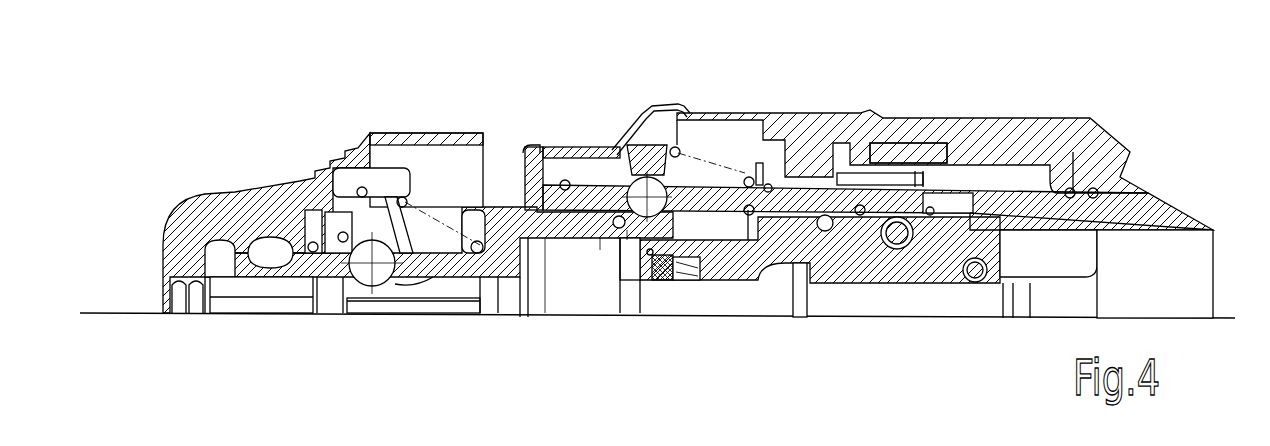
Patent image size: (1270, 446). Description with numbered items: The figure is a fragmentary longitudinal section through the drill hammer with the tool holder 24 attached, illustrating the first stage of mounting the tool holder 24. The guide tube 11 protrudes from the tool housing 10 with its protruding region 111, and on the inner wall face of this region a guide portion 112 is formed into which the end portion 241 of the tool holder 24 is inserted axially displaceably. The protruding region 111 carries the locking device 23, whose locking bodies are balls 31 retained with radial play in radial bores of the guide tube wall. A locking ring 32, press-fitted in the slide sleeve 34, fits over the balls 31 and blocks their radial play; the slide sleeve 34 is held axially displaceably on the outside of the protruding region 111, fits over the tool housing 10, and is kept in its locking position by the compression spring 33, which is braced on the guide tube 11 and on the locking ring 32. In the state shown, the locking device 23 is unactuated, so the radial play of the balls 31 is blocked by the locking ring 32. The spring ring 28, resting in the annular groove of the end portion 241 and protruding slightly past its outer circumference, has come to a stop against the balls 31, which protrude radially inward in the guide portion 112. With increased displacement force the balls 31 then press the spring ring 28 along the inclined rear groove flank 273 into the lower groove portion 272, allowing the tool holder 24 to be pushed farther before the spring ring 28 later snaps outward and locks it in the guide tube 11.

The tool housing 10 is at (1030, 142).
The guide tube 11 is at (806, 197).
The locking device 23 is at (621, 125).
The tool holder 24 is at (191, 196).
The spring ring 28 is at (630, 183).
The balls 31 is at (700, 266).
The locking ring 32 is at (648, 140).
The compression spring 33 is at (757, 163).
The slide sleeve 34 is at (680, 150).
The protruding region 111 is at (560, 180).
The guide portion 112 is at (490, 138).
The end portion 241 is at (577, 240).
The lower groove portion 272 is at (627, 240).
The rear groove flank 273 is at (600, 242).